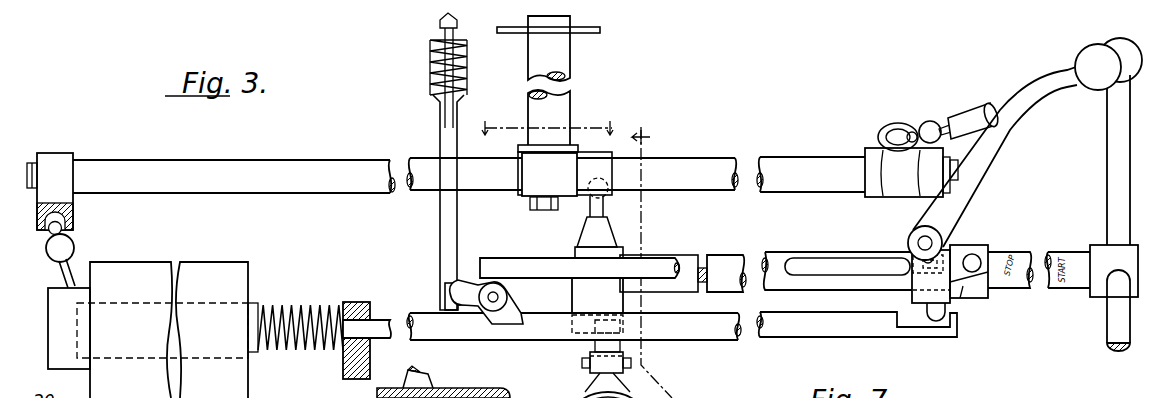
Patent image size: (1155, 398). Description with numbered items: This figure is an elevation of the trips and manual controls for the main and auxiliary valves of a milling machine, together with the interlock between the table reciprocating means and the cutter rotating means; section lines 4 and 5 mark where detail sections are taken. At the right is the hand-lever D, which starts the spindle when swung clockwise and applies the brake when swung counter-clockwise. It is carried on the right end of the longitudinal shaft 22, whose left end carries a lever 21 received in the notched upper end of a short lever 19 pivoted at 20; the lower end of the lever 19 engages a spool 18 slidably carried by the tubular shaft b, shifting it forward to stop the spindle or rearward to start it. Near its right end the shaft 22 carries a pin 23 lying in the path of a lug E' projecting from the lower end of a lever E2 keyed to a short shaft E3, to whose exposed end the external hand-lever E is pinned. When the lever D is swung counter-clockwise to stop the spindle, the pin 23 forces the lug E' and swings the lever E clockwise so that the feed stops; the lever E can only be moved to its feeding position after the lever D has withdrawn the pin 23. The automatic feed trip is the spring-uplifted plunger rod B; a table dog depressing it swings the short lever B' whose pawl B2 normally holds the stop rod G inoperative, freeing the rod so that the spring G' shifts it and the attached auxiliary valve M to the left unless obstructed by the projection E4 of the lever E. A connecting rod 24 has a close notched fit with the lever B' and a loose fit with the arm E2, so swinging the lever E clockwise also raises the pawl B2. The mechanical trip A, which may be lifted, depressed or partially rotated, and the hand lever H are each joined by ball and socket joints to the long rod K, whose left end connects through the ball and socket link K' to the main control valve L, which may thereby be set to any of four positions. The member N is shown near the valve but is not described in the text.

The mechanical trip A is at (558, 62).
The plunger rod B is at (432, 161).
The short lever B' is at (441, 295).
The pawl B2 is at (514, 309).
The section line 4— 4 is at (652, 262).
The section line 5— 5 is at (544, 130).
The long rod K is at (857, 167).
The ball and socket link K' is at (44, 255).
The main control valve L is at (48, 333).
The auxiliary supplemental valve M is at (235, 305).
The housing N is at (149, 266).
The stop rod G is at (857, 324).
The spring G' is at (319, 329).
The hand lever H is at (962, 112).
The external hand-lever E is at (1017, 145).
The lug E' is at (973, 289).
The lever E2 is at (925, 297).
The short shaft E3 is at (910, 243).
The projection E4 is at (937, 318).
The hand-lever D is at (1107, 205).
The spool 18 is at (588, 386).
The short lever 19 is at (623, 343).
The pivot 20 is at (583, 362).
The lever 21 is at (597, 264).
The shaft 22 is at (768, 258).
The pin 23 is at (976, 258).
The rod 24 is at (816, 268).
The tubular shaft b is at (645, 378).